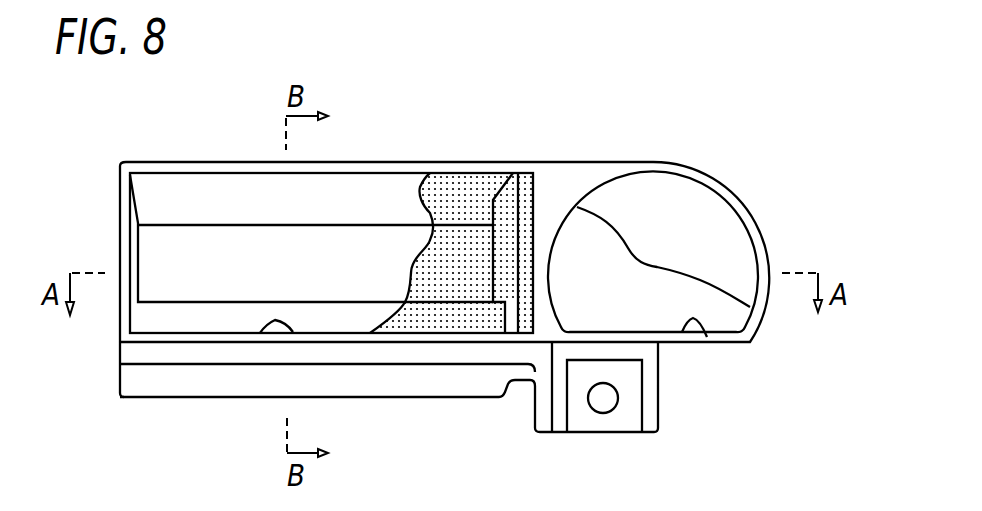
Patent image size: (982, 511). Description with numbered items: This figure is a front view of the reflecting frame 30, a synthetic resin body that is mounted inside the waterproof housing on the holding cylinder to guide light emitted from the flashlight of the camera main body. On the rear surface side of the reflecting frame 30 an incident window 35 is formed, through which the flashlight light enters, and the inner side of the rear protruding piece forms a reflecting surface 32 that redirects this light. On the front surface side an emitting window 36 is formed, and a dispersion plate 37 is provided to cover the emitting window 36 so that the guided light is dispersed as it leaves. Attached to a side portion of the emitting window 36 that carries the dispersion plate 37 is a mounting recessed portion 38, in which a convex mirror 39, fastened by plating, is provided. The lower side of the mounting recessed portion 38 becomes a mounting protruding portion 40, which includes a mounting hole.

The reflecting frame 30 is at (562, 178).
The reflecting surface 32 is at (360, 240).
The incident window 35 is at (203, 302).
The emitting window 36 is at (261, 333).
The dispersion plate 37 is at (465, 288).
The mounting recessed portion 38 is at (700, 322).
The convex mirror 39 is at (692, 200).
The mounting protruding portion 40 is at (623, 418).